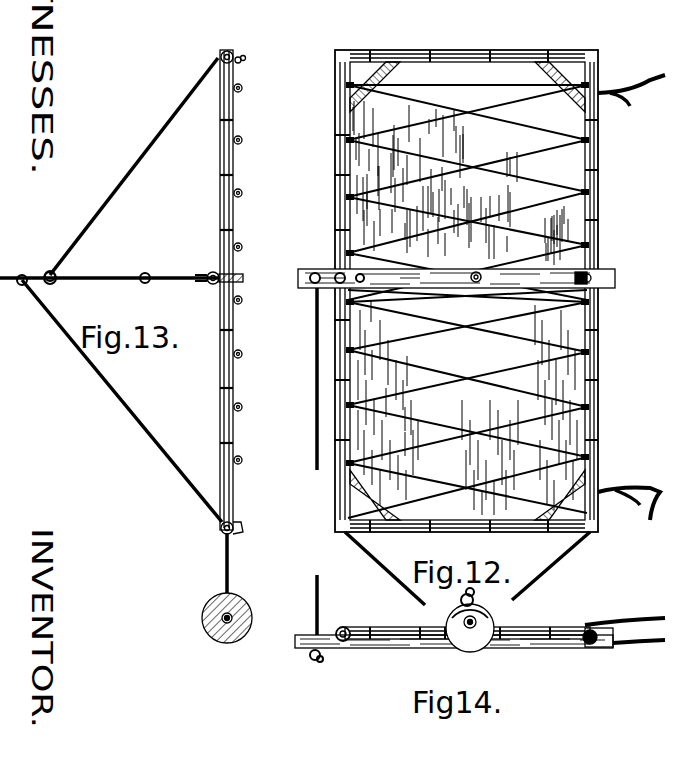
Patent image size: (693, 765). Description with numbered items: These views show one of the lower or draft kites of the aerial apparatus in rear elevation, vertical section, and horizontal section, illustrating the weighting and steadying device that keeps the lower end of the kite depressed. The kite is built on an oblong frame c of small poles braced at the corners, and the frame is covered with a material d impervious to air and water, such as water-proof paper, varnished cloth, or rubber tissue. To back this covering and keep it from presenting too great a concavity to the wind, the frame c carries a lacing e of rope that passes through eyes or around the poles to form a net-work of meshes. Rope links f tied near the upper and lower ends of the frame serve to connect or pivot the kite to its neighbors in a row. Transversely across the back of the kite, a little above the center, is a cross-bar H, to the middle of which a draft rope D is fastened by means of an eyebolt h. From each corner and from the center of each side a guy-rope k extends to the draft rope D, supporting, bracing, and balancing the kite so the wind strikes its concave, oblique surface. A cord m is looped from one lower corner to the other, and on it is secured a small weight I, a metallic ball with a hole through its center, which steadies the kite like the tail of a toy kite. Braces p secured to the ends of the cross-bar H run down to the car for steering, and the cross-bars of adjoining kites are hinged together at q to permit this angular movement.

In FIG. 13, the frame c is at (233, 374).
In FIG. 12, the frame c is at (466, 52).
In FIG. 14, the frame c is at (552, 628).
In FIG. 13, the covering d is at (219, 209).
In FIG. 12, the covering d is at (465, 308).
In FIG. 14, the covering d is at (386, 629).
In FIG. 12, the lacing e is at (528, 150).
In FIG. 12, the rope links f is at (626, 82).
In FIG. 14, the rope links f is at (640, 648).
In FIG. 13, the eyebolt h is at (210, 290).
In FIG. 12, the eyebolt h is at (475, 284).
In FIG. 13, the cross-bar H is at (243, 283).
In FIG. 12, the cross-bar H is at (308, 270).
In FIG. 14, the cross-bar H is at (568, 645).
In FIG. 13, the guy-rope k is at (135, 162).
In FIG. 13, the draft rope D is at (134, 277).
In FIG. 13, the cord m is at (237, 557).
In FIG. 12, the cord m is at (378, 566).
In FIG. 13, the weight I is at (208, 606).
In FIG. 14, the weight I is at (478, 612).
In FIG. 12, the braces p is at (314, 348).
In FIG. 14, the braces p is at (319, 600).
In FIG. 12, the hinge q is at (603, 285).